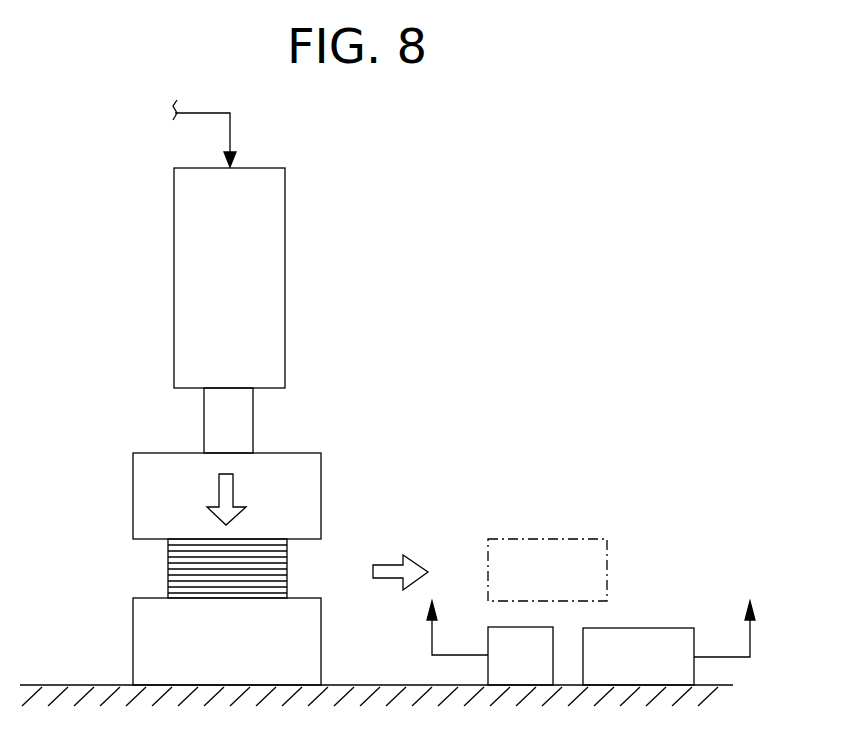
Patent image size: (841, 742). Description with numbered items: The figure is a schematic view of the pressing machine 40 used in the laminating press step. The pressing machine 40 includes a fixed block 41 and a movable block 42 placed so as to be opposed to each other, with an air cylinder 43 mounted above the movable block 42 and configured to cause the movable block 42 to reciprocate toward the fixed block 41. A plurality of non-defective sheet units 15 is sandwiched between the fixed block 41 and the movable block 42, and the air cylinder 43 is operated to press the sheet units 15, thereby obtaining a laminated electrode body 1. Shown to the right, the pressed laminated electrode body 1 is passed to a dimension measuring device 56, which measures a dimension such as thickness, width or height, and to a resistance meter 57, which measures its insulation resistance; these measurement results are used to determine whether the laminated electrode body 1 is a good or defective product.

The pressing machine 40 is at (281, 392).
The air cylinder 43 is at (182, 297).
The movable block 42 is at (152, 491).
The sheet units 15 is at (168, 585).
The fixed block 41 is at (145, 637).
The laminated electrode body 1 is at (562, 536).
The resistance meter 57 is at (512, 634).
The dimension measuring device 56 is at (658, 635).